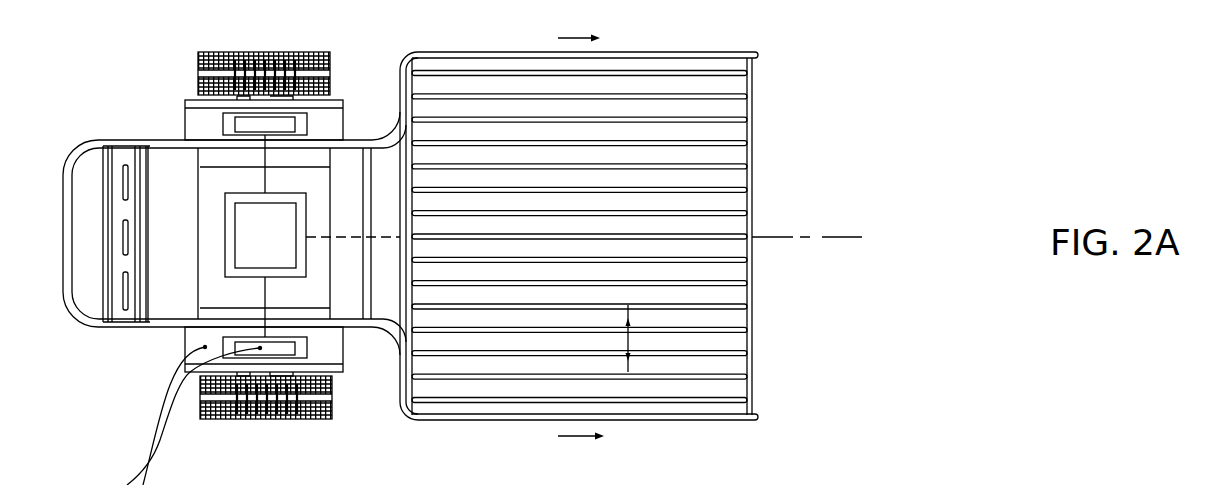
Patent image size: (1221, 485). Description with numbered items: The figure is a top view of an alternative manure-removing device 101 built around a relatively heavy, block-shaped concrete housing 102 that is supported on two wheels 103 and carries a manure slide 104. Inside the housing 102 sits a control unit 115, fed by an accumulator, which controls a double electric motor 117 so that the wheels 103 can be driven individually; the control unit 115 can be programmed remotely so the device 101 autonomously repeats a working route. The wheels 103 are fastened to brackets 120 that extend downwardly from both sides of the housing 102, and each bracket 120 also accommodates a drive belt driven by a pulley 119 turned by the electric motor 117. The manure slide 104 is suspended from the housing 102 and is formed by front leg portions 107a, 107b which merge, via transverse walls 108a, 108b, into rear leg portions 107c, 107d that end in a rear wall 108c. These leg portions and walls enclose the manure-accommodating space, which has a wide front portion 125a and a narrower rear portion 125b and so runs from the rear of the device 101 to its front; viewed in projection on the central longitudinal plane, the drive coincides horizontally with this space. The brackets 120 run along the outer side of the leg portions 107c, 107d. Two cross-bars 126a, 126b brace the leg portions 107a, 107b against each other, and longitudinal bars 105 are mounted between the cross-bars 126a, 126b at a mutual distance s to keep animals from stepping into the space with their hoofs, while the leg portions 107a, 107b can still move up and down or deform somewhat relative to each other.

The device 101 is at (116, 101).
The housing 102 is at (218, 292).
The wheels 103 is at (267, 398).
The manure slide 104 is at (503, 417).
The longitudinal bars 105 is at (623, 258).
The leg portion 107a is at (604, 417).
The leg portion 107b is at (604, 54).
The leg portion 107c is at (118, 330).
The leg portion 107d is at (142, 142).
The transverse wall 108a is at (402, 371).
The transverse wall 108b is at (403, 98).
The rear wall 108c is at (67, 224).
The control unit 115 is at (265, 235).
The double electric motor 117 is at (230, 236).
The pulley 119 is at (275, 125).
The brackets 120 is at (198, 122).
The wide front portion 125a is at (695, 383).
The narrower rear portion 125b is at (88, 218).
The cross-bar 126a is at (401, 207).
The cross-bar 126b is at (748, 180).